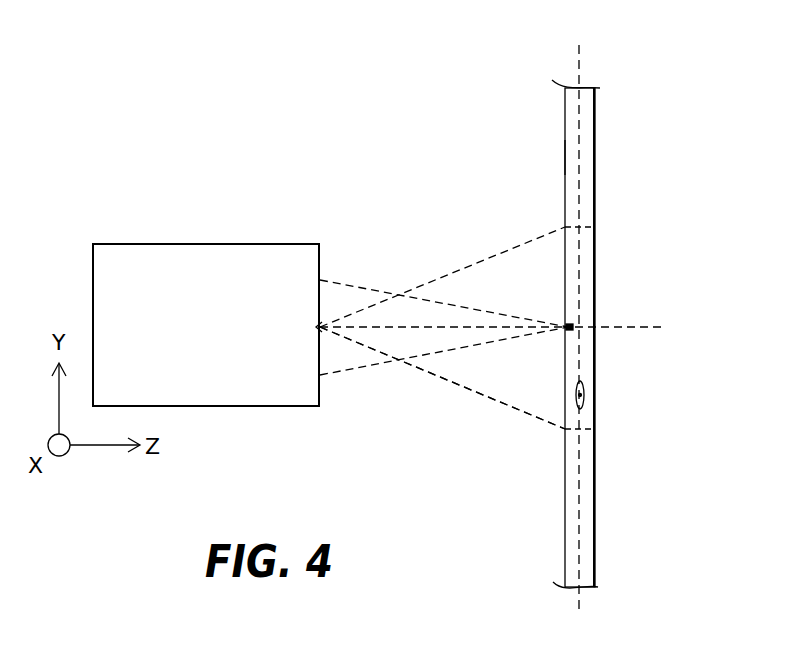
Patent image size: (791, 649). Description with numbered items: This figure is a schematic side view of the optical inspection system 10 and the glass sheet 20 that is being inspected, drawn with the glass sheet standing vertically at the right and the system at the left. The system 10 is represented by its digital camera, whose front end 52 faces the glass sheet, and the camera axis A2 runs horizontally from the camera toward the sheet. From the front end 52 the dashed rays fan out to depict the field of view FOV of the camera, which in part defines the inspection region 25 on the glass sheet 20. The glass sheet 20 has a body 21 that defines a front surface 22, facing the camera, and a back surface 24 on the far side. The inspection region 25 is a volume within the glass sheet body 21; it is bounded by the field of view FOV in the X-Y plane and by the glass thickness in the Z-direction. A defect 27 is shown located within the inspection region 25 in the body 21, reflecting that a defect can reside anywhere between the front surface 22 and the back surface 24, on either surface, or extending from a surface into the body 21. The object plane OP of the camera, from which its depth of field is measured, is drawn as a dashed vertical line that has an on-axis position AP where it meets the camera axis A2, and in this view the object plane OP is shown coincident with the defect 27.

The optical inspection system 10 is at (228, 244).
The front end 52 is at (320, 253).
The glass sheet 20 is at (540, 209).
The body 21 is at (589, 115).
The front surface 22 is at (565, 163).
The back surface 24 is at (597, 145).
The inspection region 25 is at (590, 367).
The defect 27 is at (585, 395).
The object plane OP is at (578, 52).
The on-axis position AP is at (573, 327).
The camera axis A2 is at (635, 327).
The field of view FOV is at (446, 375).